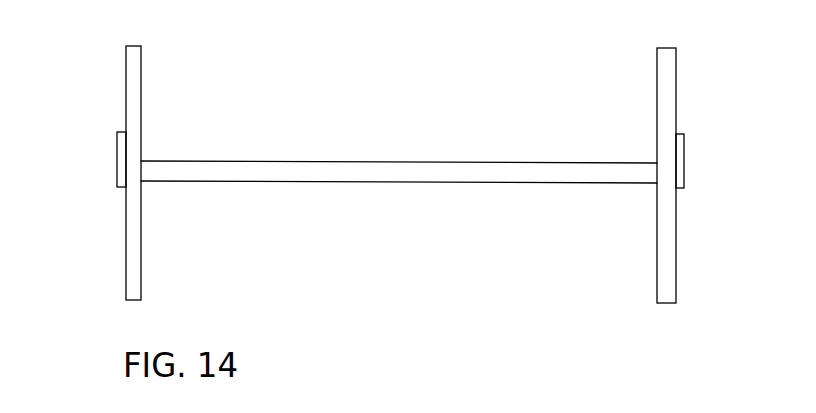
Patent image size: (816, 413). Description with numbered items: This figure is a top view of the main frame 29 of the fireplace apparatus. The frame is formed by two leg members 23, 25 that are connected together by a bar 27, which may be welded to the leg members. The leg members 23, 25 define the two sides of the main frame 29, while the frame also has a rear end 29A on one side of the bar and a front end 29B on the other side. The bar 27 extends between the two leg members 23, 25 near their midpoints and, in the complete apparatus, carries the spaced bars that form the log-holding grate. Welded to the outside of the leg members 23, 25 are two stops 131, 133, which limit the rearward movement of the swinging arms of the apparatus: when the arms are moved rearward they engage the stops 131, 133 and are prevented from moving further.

The leg member 23 is at (125, 74).
The leg member 25 is at (676, 59).
The bar 27 is at (267, 161).
The main frame 29 is at (682, 91).
The rear end 29A is at (454, 107).
The front end 29B is at (603, 260).
The stop 131 is at (116, 160).
The stop 133 is at (684, 150).